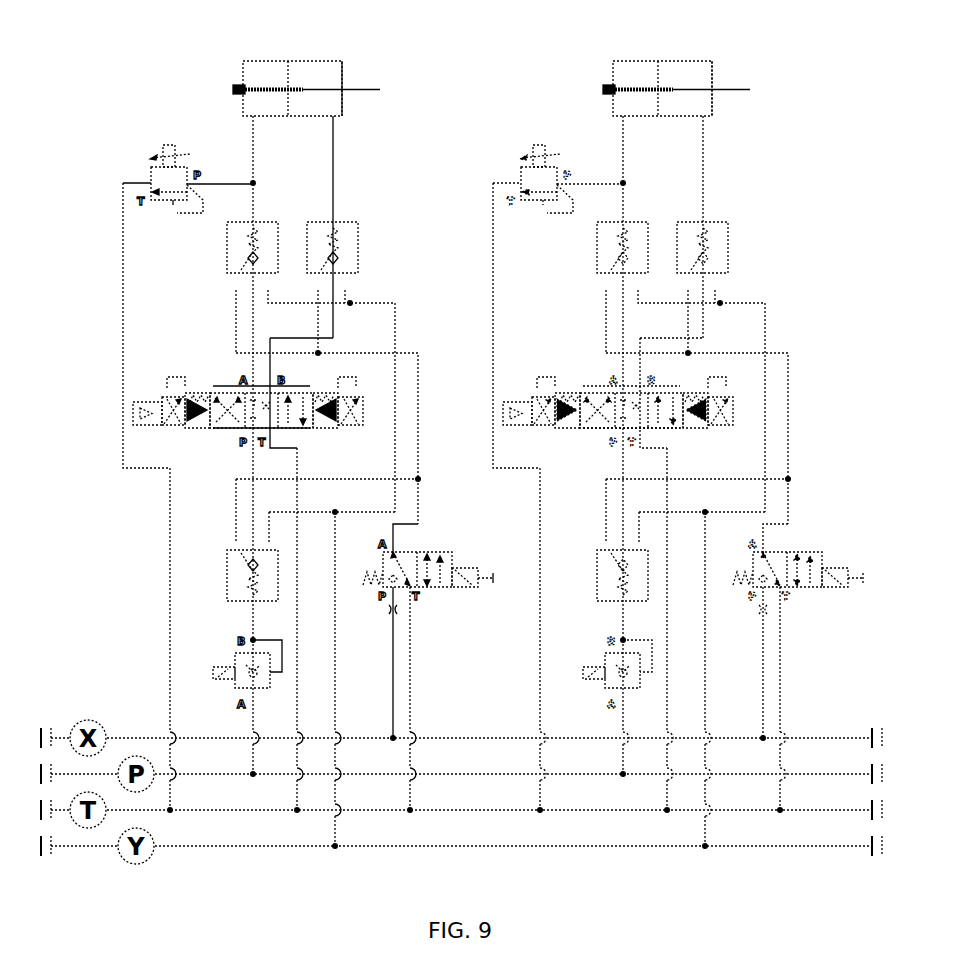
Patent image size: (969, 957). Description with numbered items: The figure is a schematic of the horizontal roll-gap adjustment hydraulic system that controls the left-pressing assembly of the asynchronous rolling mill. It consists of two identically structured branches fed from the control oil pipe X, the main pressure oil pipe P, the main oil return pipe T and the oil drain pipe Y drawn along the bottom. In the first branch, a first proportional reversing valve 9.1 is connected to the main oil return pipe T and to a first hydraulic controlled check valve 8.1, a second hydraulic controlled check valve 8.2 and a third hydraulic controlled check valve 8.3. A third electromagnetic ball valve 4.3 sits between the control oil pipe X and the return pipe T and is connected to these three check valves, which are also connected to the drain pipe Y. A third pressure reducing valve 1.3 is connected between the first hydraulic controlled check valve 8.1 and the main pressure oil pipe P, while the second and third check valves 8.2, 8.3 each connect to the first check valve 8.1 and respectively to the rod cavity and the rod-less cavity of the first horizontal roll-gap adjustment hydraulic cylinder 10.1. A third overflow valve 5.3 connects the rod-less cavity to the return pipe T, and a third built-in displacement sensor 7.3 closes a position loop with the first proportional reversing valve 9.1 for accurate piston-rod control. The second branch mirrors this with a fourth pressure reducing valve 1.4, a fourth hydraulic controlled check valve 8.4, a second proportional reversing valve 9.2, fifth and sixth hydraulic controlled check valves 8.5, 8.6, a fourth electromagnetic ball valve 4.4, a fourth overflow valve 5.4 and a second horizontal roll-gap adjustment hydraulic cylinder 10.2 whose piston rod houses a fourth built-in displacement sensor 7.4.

The first horizontal roll-gap adjustment hydraulic cylinder 10.1 is at (292, 76).
The second horizontal roll-gap adjustment hydraulic cylinder 10.2 is at (662, 76).
The third built-in displacement sensor 7.3 is at (284, 88).
The fourth built-in displacement sensor 7.4 is at (654, 88).
The third overflow valve 5.3 is at (166, 187).
The fourth overflow valve 5.4 is at (536, 187).
The first hydraulic controlled check valve 8.1 is at (229, 577).
The second hydraulic controlled check valve 8.2 is at (228, 250).
The third hydraulic controlled check valve 8.3 is at (354, 250).
The fourth hydraulic controlled check valve 8.4 is at (599, 577).
The fifth hydraulic controlled check valve 8.5 is at (598, 250).
The sixth hydraulic controlled check valve 8.6 is at (724, 250).
The first proportional reversing valve 9.1 is at (248, 417).
The second proportional reversing valve 9.2 is at (618, 417).
The third electromagnetic ball valve 4.3 is at (429, 576).
The fourth electromagnetic ball valve 4.4 is at (799, 576).
The third pressure reducing valve 1.3 is at (235, 673).
The fourth pressure reducing valve 1.4 is at (605, 673).